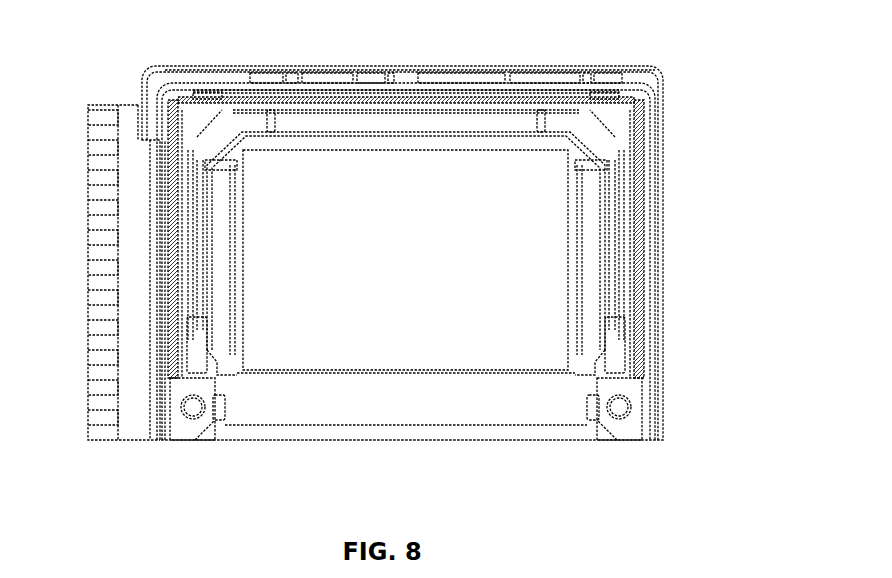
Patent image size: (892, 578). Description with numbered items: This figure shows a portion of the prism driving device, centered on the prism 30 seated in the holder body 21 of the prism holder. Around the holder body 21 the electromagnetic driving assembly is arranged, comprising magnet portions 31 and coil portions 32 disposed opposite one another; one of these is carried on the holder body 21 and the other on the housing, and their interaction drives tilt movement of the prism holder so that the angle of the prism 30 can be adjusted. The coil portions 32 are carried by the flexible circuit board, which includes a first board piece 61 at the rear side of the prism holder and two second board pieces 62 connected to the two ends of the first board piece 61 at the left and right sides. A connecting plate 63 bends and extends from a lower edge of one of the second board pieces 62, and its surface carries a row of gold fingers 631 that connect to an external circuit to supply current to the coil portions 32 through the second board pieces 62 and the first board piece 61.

The holder body 21 is at (228, 128).
The prism 30 is at (338, 340).
The magnet portion 31 is at (372, 122).
The coil portion 32 is at (455, 92).
The first board piece 61 is at (560, 83).
The second board piece 62 is at (162, 188).
The connecting plate 63 is at (135, 112).
The gold fingers 631 is at (117, 272).